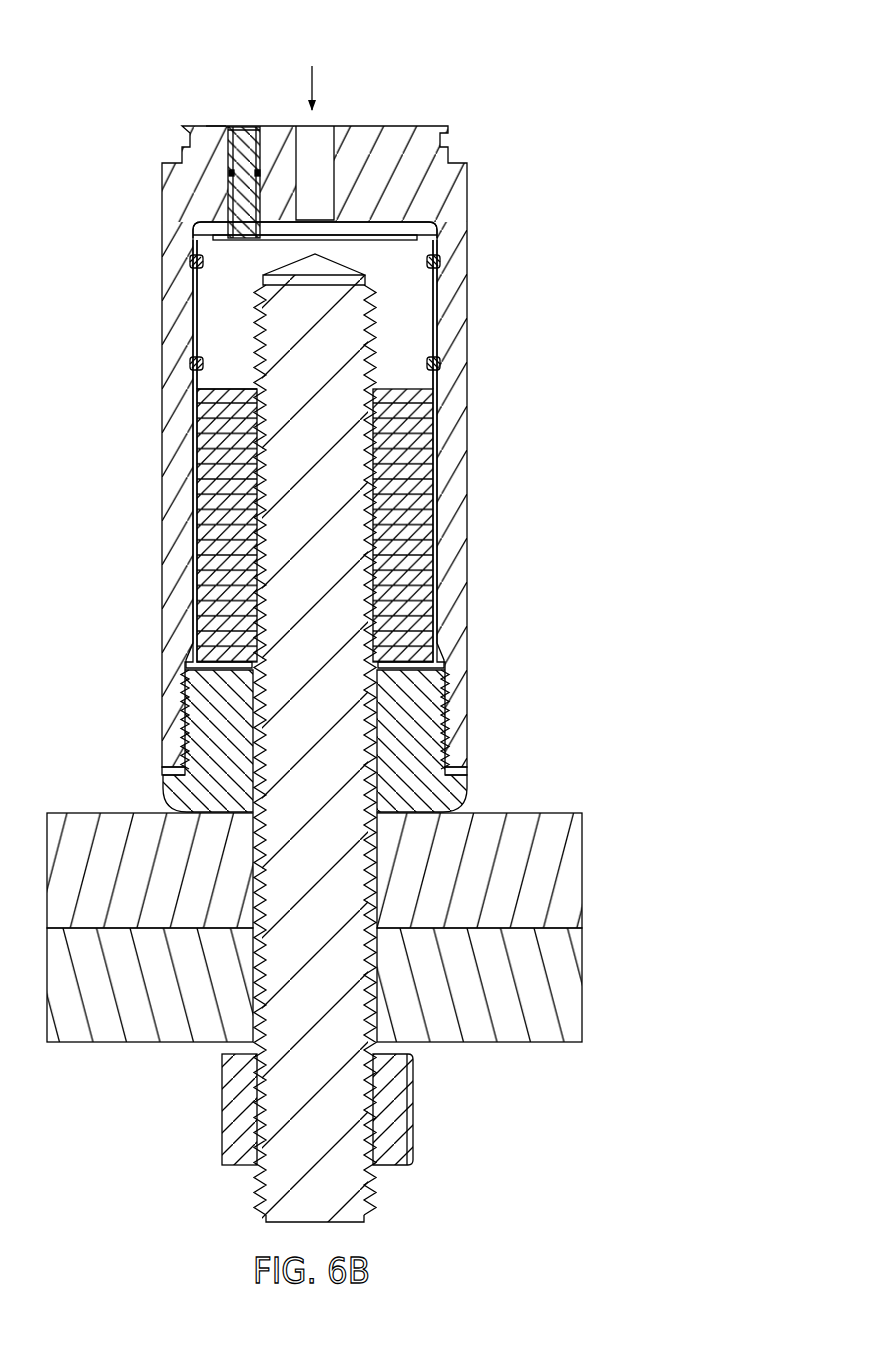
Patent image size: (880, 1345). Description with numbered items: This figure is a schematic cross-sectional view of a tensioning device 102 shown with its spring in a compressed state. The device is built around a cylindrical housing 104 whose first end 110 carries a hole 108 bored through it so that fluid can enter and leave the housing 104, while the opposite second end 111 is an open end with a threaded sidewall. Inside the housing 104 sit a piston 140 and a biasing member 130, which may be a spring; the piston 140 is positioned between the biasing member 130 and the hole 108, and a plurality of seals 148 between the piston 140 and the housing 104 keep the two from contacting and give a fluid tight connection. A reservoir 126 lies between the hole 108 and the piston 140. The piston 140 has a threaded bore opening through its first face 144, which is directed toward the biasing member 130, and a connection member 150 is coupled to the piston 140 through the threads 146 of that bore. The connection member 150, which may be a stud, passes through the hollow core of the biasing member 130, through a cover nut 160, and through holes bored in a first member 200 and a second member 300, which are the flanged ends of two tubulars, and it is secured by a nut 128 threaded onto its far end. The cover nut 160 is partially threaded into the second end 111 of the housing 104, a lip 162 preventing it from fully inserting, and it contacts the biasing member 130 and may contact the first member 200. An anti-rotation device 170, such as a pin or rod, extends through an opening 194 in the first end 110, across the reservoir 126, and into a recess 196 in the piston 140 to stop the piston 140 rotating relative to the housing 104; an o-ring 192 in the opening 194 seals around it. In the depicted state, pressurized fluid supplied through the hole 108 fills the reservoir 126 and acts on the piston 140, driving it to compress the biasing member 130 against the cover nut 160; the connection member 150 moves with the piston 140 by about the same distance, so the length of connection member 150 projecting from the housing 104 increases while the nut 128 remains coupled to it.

The tensioning device 102 is at (622, 96).
The housing 104 is at (436, 193).
The hole 108 is at (323, 152).
The first end 110 is at (216, 138).
The second end 111 is at (173, 758).
The reservoir 126 is at (310, 230).
The nut 128 is at (389, 1118).
The biasing member 130 is at (210, 580).
The piston 140 is at (415, 283).
The first face 144 is at (235, 382).
The threads 146 is at (380, 330).
The seals 148 is at (192, 261).
The connection member 150 is at (350, 1195).
The cover nut 160 is at (405, 715).
The lip 162 is at (465, 773).
The anti-rotation device 170 is at (250, 147).
The o-ring 192 is at (233, 168).
The opening 194 is at (223, 116).
The recess 196 is at (370, 240).
The first member 200 is at (528, 879).
The second member 300 is at (528, 999).